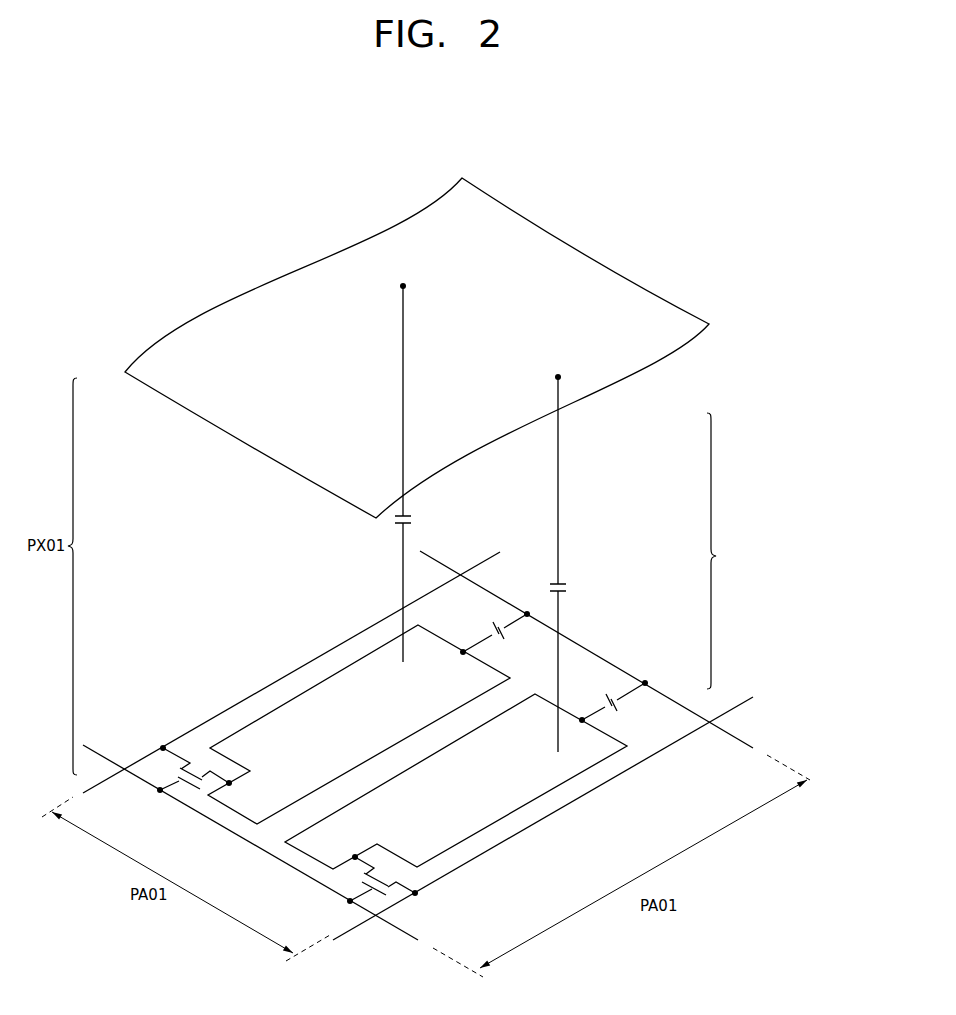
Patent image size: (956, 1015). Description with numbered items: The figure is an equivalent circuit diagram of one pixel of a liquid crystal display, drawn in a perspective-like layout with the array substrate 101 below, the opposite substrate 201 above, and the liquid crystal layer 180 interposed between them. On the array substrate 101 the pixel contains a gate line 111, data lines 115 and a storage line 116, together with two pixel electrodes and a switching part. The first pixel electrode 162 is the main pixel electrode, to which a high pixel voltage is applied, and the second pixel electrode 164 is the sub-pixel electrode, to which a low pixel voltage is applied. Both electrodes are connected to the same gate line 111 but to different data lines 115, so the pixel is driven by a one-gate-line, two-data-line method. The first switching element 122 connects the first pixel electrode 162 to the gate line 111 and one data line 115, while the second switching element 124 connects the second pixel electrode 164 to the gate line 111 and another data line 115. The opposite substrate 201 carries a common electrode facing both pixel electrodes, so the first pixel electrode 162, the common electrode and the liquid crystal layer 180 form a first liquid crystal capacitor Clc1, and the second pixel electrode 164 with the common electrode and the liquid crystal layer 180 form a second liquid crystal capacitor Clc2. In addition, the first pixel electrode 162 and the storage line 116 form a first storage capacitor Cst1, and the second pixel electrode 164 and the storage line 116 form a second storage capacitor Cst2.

The opposite substrate 201 is at (686, 270).
The array substrate 101 is at (728, 848).
The liquid crystal layer 180 is at (732, 551).
The storage line 116 is at (649, 680).
The data line 115 is at (257, 694).
The first switching element 122 is at (160, 745).
The second switching element 124 is at (397, 905).
The gate line 111 is at (265, 853).
The first pixel electrode 162 is at (307, 858).
The second pixel electrode 164 is at (220, 800).
The first liquid crystal capacitor Clc1 is at (580, 563).
The second liquid crystal capacitor Clc2 is at (426, 472).
The first storage capacitor Cst1 is at (614, 707).
The second storage capacitor Cst2 is at (498, 639).